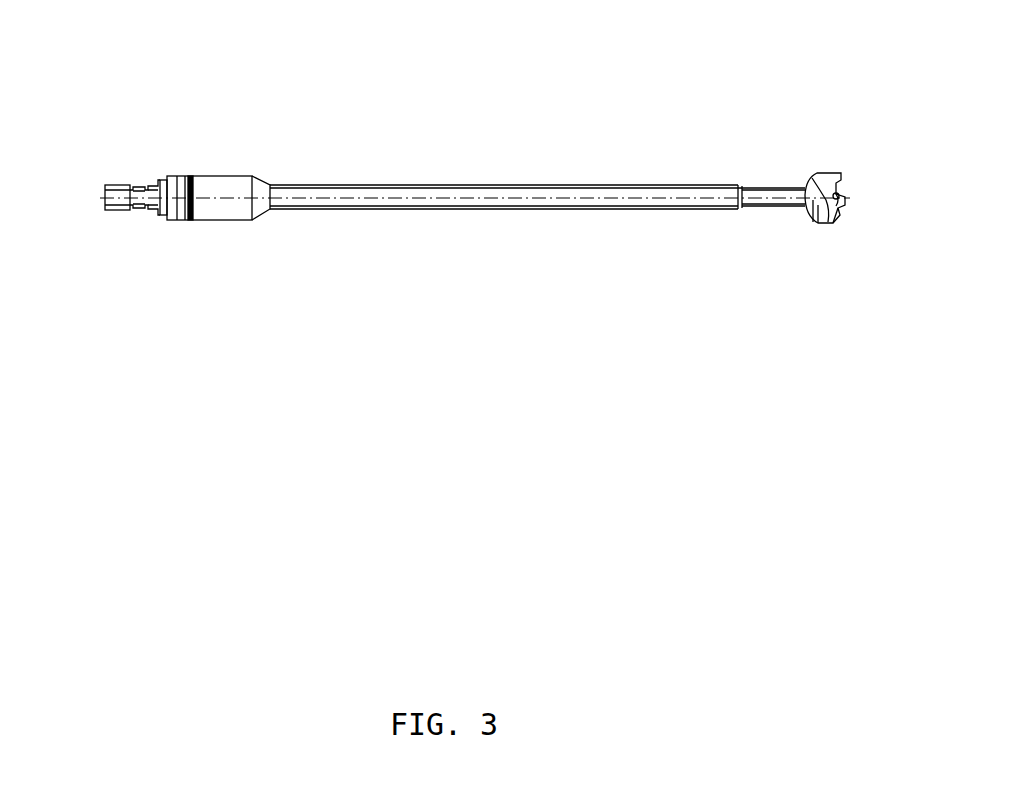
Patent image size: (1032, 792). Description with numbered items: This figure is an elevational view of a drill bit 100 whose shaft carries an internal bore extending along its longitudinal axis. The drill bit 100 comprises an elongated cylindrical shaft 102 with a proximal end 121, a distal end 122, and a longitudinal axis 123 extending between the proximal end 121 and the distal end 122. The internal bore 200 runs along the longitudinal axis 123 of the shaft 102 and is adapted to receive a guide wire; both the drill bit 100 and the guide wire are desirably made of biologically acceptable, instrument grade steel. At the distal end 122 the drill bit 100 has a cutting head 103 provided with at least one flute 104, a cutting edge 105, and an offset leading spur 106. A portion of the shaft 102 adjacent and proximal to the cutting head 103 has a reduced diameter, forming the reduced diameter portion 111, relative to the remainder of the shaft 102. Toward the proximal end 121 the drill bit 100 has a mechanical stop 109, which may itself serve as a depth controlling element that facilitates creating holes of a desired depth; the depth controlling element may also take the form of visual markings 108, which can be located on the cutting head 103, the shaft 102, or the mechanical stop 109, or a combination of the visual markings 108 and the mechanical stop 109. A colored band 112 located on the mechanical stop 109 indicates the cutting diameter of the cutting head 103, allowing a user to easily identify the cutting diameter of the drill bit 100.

The drill bit 100 is at (512, 132).
The proximal end 121 is at (137, 145).
The longitudinal axis 123 is at (82, 200).
The colored band 112 is at (190, 175).
The mechanical stop 109 is at (183, 245).
The elongated cylindrical shaft 102 is at (553, 237).
The reduced diameter portion 111 is at (750, 212).
The distal end 122 is at (763, 152).
The cutting head 103 is at (826, 173).
The flute 104 is at (827, 220).
The cutting edge 105 is at (843, 205).
The offset leading spur 106 is at (847, 222).
The visual markings 108 is at (808, 215).
The internal bore 200 is at (840, 190).